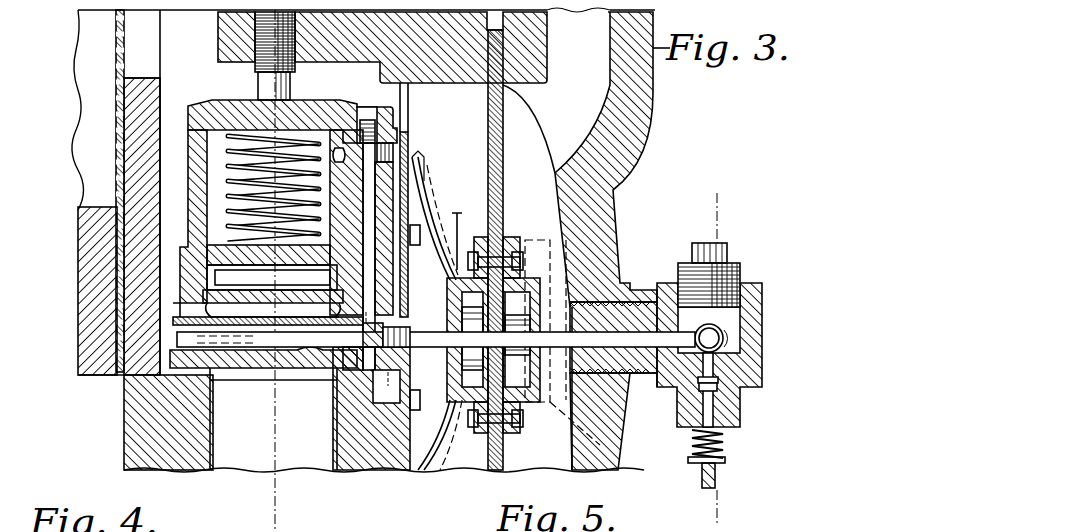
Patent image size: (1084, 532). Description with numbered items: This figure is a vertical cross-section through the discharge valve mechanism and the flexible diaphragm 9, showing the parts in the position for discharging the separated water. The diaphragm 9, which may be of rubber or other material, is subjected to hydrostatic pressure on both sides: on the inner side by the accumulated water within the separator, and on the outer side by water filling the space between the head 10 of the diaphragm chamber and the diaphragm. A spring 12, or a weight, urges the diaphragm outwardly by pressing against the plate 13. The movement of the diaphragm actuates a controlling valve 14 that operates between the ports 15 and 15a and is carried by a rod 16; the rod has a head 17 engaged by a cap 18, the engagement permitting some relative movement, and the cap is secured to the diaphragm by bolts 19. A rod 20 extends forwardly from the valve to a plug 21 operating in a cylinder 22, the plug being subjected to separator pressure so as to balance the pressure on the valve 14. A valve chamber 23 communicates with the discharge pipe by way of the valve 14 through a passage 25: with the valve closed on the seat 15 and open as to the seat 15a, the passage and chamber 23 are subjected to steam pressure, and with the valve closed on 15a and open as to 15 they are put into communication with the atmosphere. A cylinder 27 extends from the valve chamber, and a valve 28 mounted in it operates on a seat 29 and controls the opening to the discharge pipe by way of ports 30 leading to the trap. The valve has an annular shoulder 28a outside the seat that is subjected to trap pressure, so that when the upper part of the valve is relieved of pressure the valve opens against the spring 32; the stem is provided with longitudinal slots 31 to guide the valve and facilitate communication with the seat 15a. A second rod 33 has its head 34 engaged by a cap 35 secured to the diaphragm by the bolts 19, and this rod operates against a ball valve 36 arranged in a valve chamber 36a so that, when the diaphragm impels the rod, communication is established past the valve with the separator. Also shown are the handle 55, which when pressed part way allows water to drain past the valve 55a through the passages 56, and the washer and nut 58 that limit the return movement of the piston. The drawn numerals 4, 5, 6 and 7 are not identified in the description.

The adjusting screw 4 is at (258, 84).
The center line 5 is at (715, 352).
The valve rod 6 is at (530, 330).
The passage 7 is at (381, 351).
The flexible diaphragm 9 is at (487, 470).
The head of the diaphragm chamber 10 is at (628, 452).
The spring 12 is at (446, 425).
The plate 13 is at (393, 470).
The valve 14 is at (340, 392).
The port 15 is at (333, 360).
The port 15a is at (335, 408).
The rod 16 is at (520, 272).
The head 17 is at (617, 210).
The cap 18 is at (451, 233).
The bolts 19 is at (468, 425).
The rod 20 is at (267, 364).
The plug 21 is at (163, 363).
The cylinder 22 is at (78, 379).
The valve chamber 23 is at (190, 158).
The passage 25 is at (370, 190).
The cylinder 27 is at (188, 213).
The valve 28 is at (188, 180).
The annular shoulder 28a is at (68, 291).
The seat 29 is at (173, 308).
The ports 30 is at (227, 273).
The longitudinal slots 31 is at (334, 470).
The spring 32 is at (190, 118).
The rod 33 is at (630, 406).
The head 34 is at (450, 337).
The cap 35 is at (603, 445).
The ball valve 36 is at (738, 420).
The valve chamber 36a is at (712, 316).
The handle 55 is at (717, 482).
The valve 55a is at (693, 428).
The passages 56 is at (724, 430).
The washer and nut 58 is at (728, 442).